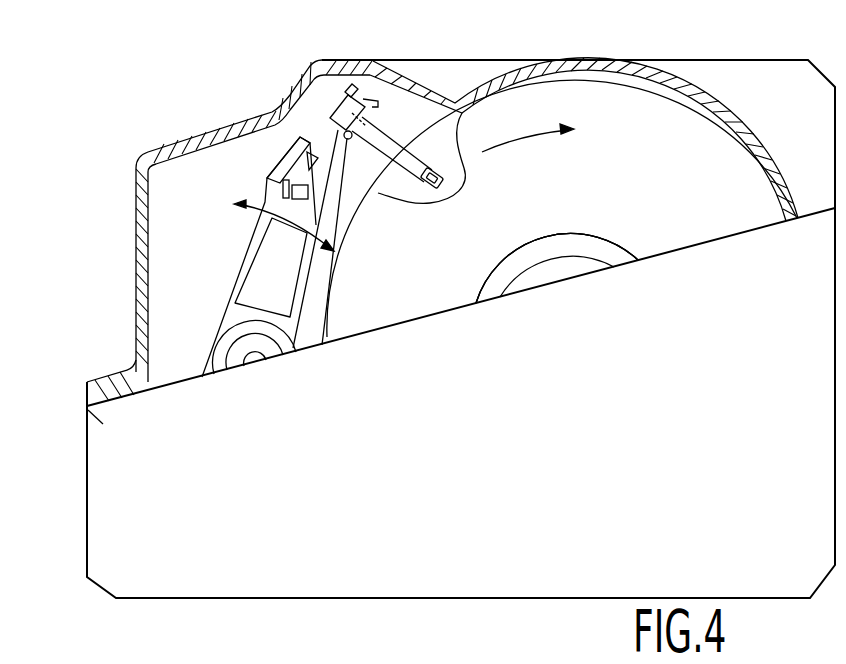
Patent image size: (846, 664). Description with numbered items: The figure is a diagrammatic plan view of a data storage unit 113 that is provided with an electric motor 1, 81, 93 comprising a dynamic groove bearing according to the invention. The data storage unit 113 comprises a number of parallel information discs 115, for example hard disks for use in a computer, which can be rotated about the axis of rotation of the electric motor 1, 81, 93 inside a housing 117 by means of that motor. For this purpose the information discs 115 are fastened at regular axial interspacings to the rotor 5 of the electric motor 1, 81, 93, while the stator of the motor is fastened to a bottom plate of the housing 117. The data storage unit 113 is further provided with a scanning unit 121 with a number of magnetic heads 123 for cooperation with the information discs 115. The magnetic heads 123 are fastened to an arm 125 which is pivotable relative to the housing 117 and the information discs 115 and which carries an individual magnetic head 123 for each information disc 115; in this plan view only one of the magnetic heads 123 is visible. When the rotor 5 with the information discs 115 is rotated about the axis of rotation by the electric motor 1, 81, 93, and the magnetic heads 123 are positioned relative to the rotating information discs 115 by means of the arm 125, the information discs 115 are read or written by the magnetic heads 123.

The data storage unit 113 is at (741, 60).
The information disc 115 is at (540, 100).
The housing 117 is at (95, 389).
The scanning unit 121 is at (268, 170).
The magnetic head 123 is at (426, 190).
The arm 125 is at (257, 244).
The electric motor 1 is at (522, 254).
The electric motor 81 is at (508, 232).
The electric motor 93 is at (538, 232).
The rotor 5 is at (618, 252).